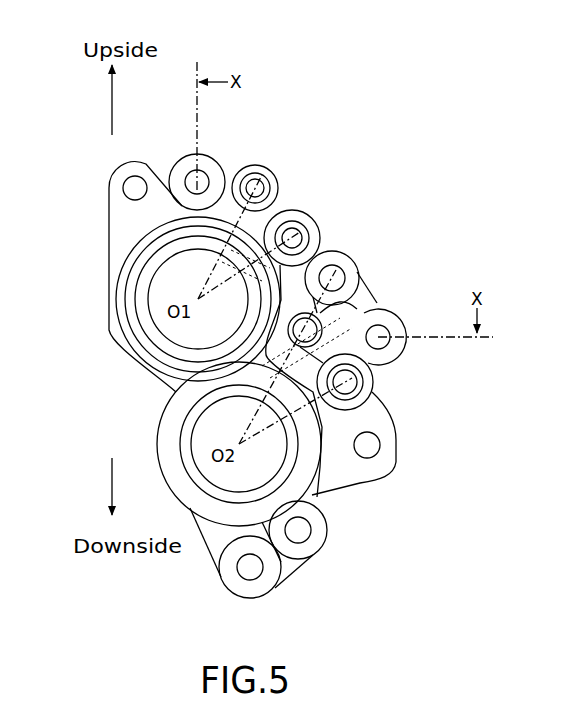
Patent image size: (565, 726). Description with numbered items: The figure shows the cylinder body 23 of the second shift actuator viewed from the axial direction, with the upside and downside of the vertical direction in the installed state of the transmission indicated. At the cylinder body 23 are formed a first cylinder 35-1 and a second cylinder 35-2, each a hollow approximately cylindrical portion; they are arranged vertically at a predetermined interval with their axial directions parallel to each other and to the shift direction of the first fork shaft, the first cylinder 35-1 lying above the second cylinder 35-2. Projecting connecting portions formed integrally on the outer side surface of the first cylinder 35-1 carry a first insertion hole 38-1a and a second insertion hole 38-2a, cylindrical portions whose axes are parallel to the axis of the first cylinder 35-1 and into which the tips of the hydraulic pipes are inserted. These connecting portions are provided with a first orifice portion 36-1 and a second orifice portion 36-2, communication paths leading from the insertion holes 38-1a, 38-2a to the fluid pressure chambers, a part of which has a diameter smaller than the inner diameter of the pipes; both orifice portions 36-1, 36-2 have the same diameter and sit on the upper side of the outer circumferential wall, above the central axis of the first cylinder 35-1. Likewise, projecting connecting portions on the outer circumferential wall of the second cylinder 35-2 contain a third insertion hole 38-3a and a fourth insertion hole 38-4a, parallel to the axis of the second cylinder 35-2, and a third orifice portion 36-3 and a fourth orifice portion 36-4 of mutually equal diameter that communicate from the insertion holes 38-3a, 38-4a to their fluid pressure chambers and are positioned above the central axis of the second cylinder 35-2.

The cylinder body 23 is at (378, 149).
The first cylinder 35-1 is at (116, 326).
The second cylinder 35-2 is at (152, 444).
The first orifice portion 36-1 is at (295, 210).
The second orifice portion 36-2 is at (216, 162).
The third orifice portion 36-3 is at (363, 308).
The fourth orifice portion 36-4 is at (386, 405).
The first insertion hole 38-1a is at (322, 228).
The second insertion hole 38-2a is at (267, 163).
The third insertion hole 38-3a is at (320, 312).
The fourth insertion hole 38-4a is at (378, 379).